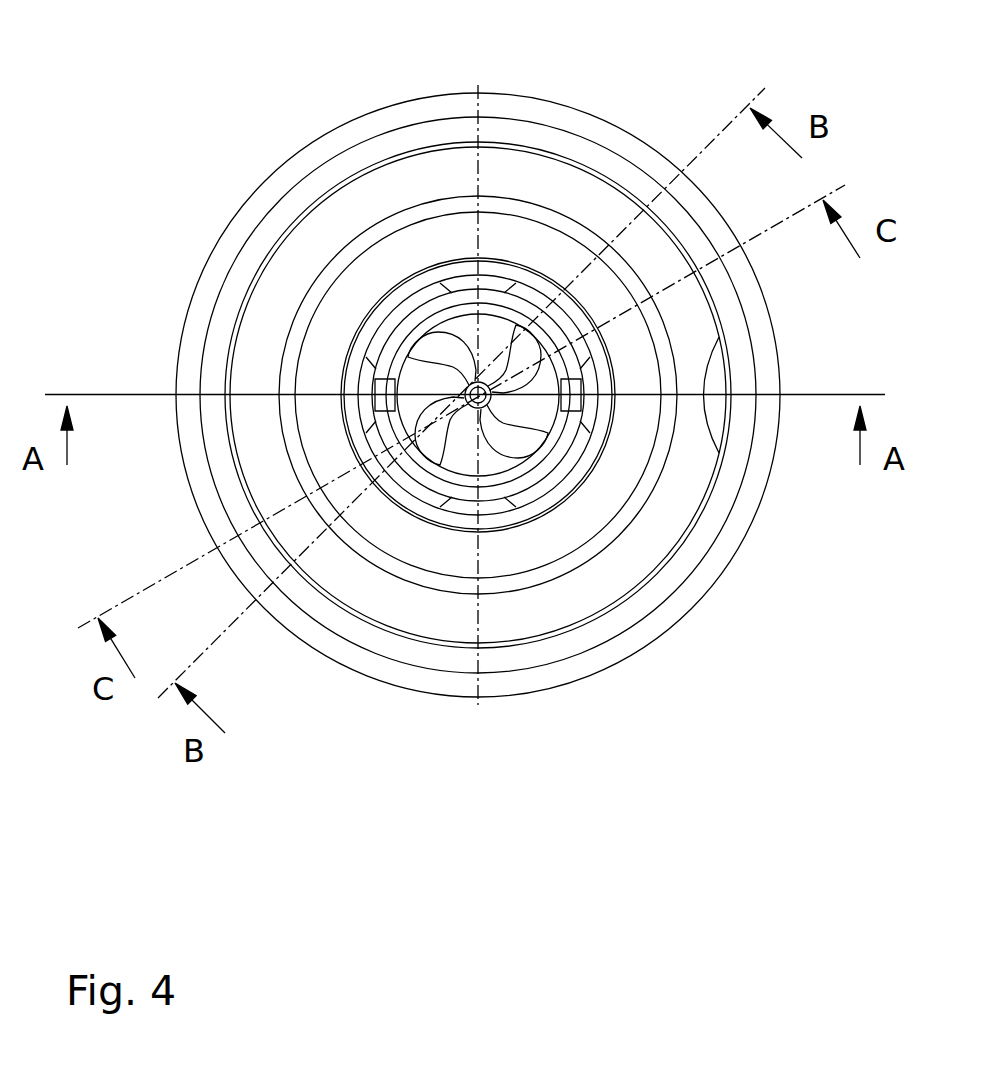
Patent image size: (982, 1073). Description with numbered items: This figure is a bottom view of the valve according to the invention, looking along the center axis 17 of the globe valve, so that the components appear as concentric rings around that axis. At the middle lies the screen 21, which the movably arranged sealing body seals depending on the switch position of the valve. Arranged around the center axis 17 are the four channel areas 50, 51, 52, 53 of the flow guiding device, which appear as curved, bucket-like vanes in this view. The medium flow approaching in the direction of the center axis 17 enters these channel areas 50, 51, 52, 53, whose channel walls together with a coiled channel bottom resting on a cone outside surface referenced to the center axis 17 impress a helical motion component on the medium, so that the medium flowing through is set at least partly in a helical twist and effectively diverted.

The center axis 17 is at (478, 405).
The screen 21 is at (478, 380).
The channel area 50 is at (505, 368).
The channel area 51 is at (525, 442).
The channel area 52 is at (425, 408).
The channel area 53 is at (435, 330).